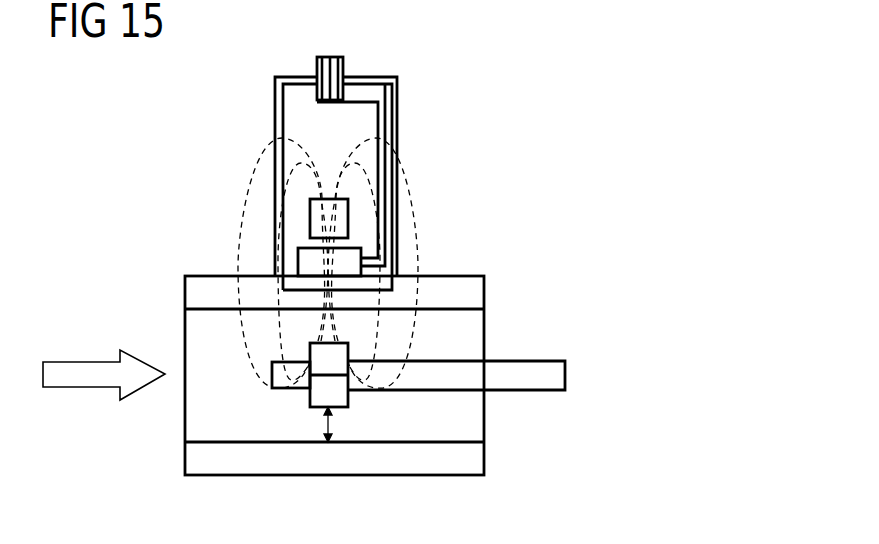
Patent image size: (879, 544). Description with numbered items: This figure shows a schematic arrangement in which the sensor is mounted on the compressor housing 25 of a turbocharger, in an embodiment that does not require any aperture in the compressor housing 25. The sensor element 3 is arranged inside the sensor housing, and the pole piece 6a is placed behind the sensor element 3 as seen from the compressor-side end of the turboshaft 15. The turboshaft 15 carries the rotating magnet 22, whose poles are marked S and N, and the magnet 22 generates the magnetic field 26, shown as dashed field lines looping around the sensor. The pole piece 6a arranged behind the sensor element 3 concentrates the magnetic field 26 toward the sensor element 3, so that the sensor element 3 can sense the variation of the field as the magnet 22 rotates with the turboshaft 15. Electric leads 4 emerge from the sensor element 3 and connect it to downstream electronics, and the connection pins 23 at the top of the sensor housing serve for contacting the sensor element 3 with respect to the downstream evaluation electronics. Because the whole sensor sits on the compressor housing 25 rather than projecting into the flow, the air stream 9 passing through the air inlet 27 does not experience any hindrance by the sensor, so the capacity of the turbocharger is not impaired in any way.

The sensor element 3 is at (306, 261).
The electric leads 4 is at (397, 118).
The pole piece 6a is at (332, 198).
The air stream 9 is at (84, 372).
The turboshaft 15 is at (464, 368).
The magnet 22 is at (345, 397).
The connection pins 23 is at (343, 62).
The compressor housing 25 is at (466, 283).
The magnetic field 26 is at (413, 176).
The air inlet 27 is at (229, 412).
The south pole S is at (322, 357).
The north pole N is at (320, 393).